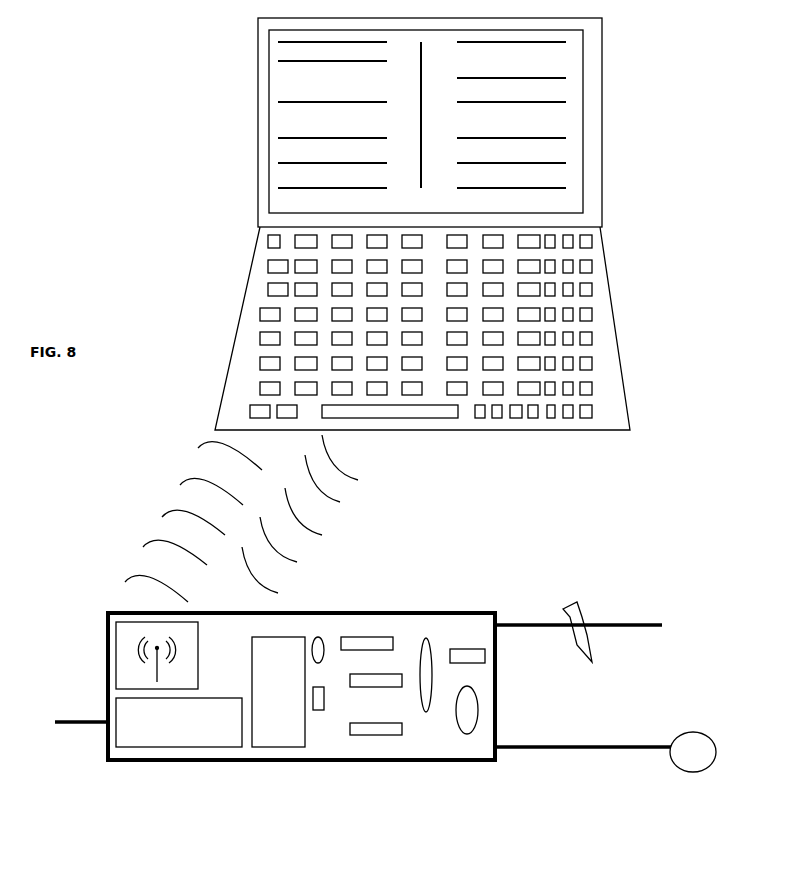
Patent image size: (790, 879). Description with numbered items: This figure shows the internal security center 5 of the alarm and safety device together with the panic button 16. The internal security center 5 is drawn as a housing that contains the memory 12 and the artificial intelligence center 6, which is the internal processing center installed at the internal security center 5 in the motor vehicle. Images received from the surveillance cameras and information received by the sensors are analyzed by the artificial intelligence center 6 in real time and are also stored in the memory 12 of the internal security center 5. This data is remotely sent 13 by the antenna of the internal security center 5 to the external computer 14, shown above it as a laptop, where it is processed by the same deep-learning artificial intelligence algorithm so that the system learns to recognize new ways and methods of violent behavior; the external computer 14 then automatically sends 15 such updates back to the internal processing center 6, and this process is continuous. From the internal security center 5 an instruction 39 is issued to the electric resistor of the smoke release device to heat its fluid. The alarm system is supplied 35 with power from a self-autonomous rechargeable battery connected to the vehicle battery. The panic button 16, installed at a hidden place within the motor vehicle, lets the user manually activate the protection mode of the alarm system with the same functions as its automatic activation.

The external computer 14 is at (243, 188).
The remote sending of data 13 is at (132, 634).
The automatic update sending 15 is at (313, 548).
The internal security center 5 is at (393, 762).
The memory 12 is at (162, 723).
The artificial intelligence center 6 is at (278, 723).
The instruction 39 is at (72, 724).
The power supply 35 is at (636, 623).
The panic button 16 is at (681, 775).